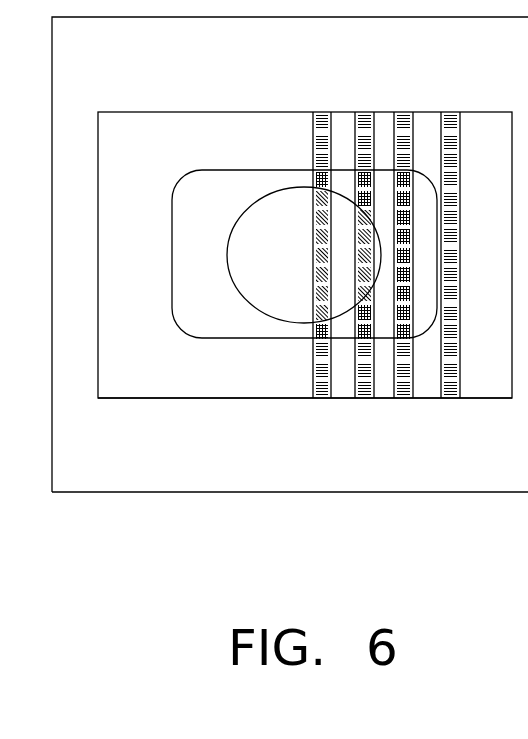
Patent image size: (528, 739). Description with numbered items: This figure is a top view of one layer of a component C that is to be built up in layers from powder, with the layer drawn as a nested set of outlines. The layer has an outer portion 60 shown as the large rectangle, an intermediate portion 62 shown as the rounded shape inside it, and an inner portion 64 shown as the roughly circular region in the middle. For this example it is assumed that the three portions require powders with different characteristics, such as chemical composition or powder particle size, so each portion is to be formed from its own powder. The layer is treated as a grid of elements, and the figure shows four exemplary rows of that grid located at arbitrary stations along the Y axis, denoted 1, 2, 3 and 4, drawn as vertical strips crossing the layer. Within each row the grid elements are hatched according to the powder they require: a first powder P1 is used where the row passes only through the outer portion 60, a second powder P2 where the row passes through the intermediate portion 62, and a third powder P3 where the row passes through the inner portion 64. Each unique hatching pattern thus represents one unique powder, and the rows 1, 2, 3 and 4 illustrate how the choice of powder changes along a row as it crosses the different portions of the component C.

The outer portion 60 is at (173, 397).
The intermediate portion 62 is at (257, 340).
The inner portion 64 is at (245, 300).
The first row 1 is at (473, 242).
The second row 2 is at (447, 242).
The third row 3 is at (365, 242).
The fourth row 4 is at (295, 242).
The first powder P1 is at (452, 142).
The second powder P2 is at (407, 217).
The third powder P3 is at (323, 216).
The component C is at (171, 399).